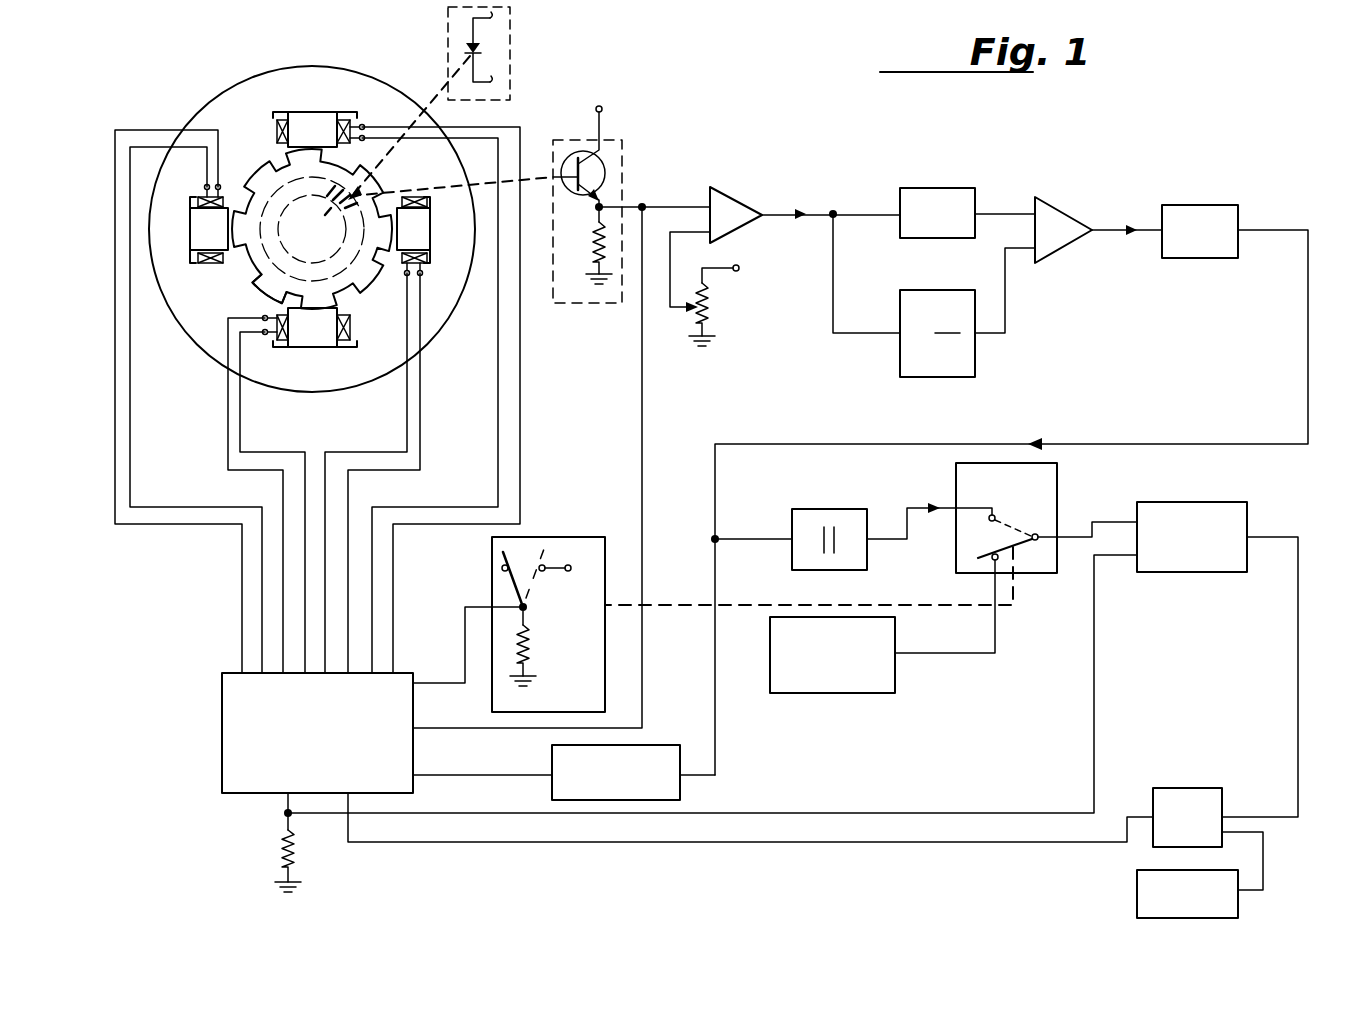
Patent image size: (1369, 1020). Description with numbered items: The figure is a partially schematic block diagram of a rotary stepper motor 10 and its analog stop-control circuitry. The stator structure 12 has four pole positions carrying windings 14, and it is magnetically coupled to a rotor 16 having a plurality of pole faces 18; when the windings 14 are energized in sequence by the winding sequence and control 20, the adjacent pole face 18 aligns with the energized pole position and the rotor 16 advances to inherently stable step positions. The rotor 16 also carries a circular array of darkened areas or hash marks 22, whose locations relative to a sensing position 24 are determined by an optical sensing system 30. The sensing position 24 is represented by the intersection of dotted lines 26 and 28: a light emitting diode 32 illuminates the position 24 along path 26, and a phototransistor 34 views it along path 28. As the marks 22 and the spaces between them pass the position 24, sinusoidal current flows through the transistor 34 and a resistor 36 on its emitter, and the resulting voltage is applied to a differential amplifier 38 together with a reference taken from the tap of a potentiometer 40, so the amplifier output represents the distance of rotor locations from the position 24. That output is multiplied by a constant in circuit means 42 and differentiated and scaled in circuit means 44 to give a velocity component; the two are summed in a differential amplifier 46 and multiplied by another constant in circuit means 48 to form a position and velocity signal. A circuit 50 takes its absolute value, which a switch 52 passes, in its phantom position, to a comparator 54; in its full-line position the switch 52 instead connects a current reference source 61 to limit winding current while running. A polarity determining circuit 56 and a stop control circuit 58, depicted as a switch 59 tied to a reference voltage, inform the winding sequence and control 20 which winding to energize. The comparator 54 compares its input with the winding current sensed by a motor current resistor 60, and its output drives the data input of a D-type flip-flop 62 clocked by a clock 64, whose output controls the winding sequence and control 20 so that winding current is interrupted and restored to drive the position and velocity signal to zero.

The rotary stepper motor 10 is at (243, 70).
The stator structure 12 is at (333, 67).
The windings 14 is at (345, 114).
The rotor 16 is at (270, 190).
The pole faces 18 is at (268, 283).
The winding sequence and control circuit 20 is at (226, 735).
The darkened areas or hash marks 22 is at (328, 196).
The sensing position 24 is at (353, 185).
The light path 26 is at (425, 102).
The light path 28 is at (488, 184).
The optical sensing system 30 is at (555, 121).
The light emitting diode 32 is at (478, 47).
The phototransistor 34 is at (595, 170).
The resistor 36 is at (597, 248).
The differential amplifier 38 is at (733, 203).
The potentiometer 40 is at (705, 307).
The circuit means 42 is at (921, 187).
The circuit means 44 is at (972, 360).
The differential amplifier 46 is at (1059, 212).
The circuit means 48 is at (1185, 208).
The absolute value circuit 50 is at (827, 508).
The switch 52 is at (1053, 522).
The comparator 54 is at (1200, 501).
The polarity determining circuit 56 is at (657, 746).
The stop control circuit 58 is at (492, 583).
The switch 59 is at (520, 578).
The motor current resistor 60 is at (282, 850).
The current reference source 61 is at (872, 692).
The D-type flip-flop 62 is at (1183, 788).
The clock 64 is at (1138, 890).